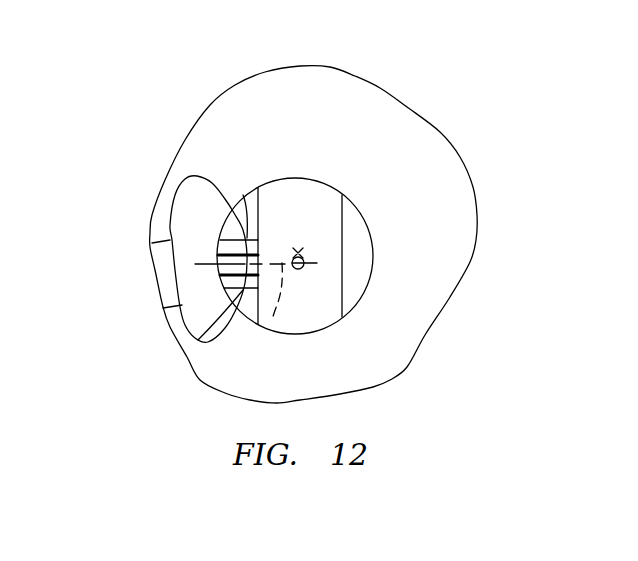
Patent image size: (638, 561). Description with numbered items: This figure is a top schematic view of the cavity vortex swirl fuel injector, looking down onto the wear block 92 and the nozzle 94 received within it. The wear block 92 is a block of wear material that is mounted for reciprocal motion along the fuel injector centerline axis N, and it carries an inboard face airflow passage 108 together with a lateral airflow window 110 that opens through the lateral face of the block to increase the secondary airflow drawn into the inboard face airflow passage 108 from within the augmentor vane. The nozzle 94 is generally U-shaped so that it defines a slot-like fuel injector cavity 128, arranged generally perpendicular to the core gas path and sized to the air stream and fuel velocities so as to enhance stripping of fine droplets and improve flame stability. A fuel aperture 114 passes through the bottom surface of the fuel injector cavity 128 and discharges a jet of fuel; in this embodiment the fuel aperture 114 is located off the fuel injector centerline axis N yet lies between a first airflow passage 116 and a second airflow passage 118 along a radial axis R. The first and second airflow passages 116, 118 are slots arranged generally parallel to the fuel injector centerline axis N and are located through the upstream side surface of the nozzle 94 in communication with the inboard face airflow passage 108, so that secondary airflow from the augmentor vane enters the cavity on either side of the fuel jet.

The wear block 92 is at (408, 161).
The nozzle 94 is at (355, 268).
The inboard face airflow passage 108 is at (217, 228).
The lateral airflow window 110 is at (167, 307).
The fuel aperture 114 is at (298, 270).
The first airflow passage 116 is at (198, 340).
The second airflow passage 118 is at (243, 195).
The fuel injector cavity 128 is at (300, 208).
The fuel injector centerline axis N is at (288, 255).
The radial axis R is at (272, 320).